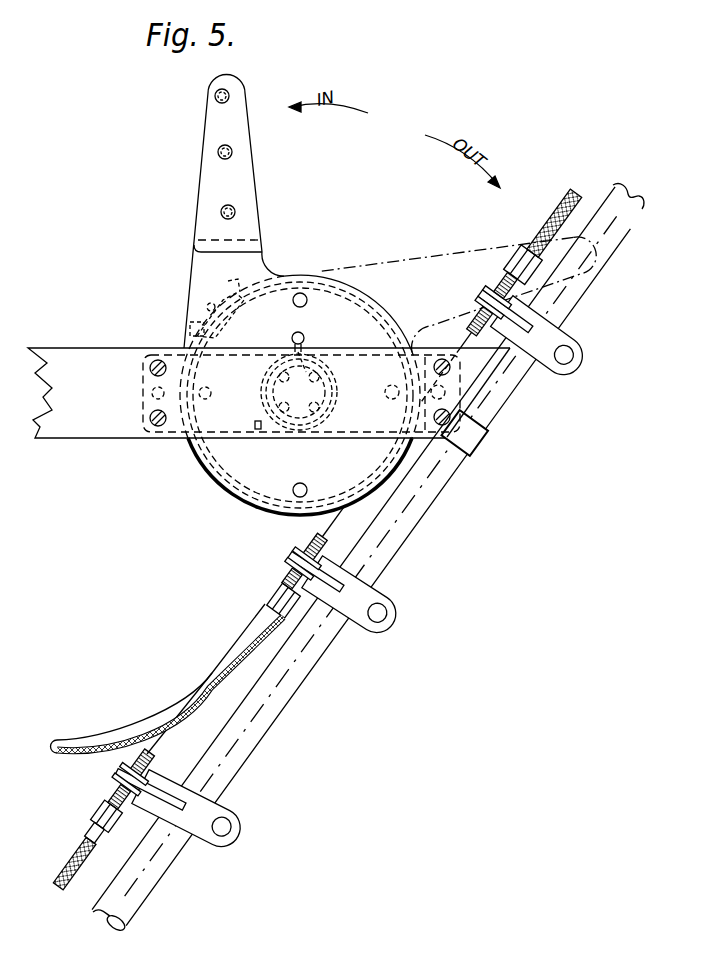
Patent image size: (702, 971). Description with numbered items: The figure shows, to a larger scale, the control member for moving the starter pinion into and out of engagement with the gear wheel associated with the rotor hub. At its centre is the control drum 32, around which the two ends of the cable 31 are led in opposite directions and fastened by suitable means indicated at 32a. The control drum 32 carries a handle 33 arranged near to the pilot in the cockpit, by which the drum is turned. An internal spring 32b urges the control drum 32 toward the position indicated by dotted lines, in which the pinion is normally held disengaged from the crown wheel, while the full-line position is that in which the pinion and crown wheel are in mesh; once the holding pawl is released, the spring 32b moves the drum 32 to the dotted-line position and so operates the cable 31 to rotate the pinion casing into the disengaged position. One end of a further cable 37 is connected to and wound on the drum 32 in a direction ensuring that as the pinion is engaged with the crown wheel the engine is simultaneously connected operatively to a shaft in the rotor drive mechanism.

The cable 31 is at (467, 333).
The control drum 32 is at (262, 310).
The cable fastening 32a is at (190, 316).
The internal spring 32b is at (330, 380).
The handle 33 is at (233, 173).
The cable 37 is at (205, 690).